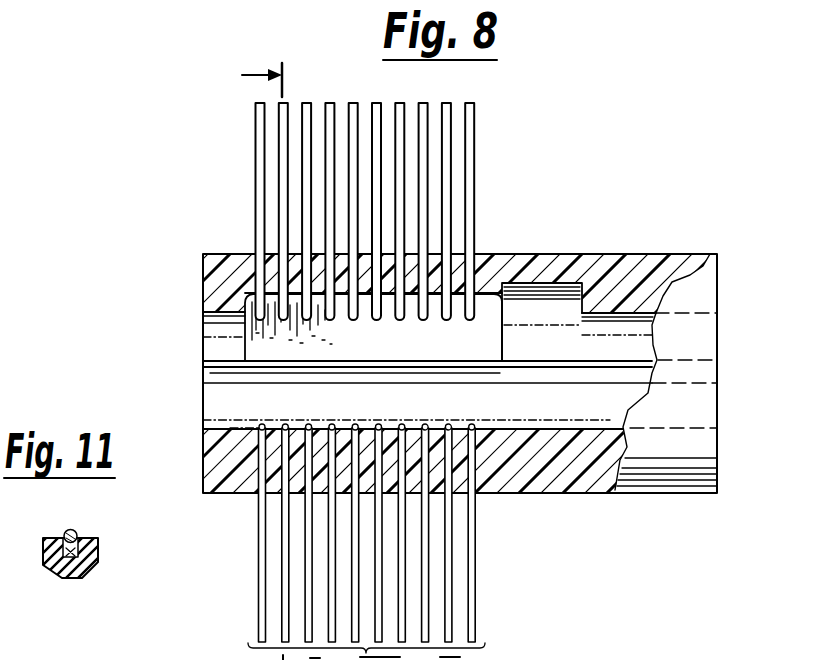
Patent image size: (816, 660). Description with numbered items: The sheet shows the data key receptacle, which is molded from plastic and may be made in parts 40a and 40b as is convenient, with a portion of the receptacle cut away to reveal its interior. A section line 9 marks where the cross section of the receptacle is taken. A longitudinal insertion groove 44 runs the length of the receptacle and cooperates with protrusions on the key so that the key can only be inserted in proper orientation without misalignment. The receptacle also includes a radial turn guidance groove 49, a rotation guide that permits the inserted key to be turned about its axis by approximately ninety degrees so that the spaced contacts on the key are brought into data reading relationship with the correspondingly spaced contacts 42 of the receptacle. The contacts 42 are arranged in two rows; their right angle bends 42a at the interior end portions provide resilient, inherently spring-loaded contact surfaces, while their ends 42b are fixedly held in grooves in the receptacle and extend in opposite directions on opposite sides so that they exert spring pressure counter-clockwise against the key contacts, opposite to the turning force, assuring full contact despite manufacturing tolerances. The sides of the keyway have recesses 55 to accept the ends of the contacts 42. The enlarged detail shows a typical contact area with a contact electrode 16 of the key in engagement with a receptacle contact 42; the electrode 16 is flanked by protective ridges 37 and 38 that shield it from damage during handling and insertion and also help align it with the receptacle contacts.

In FIG. 8, the section line 9 is at (270, 80).
In FIG. 11, the contact electrode 16 is at (52, 565).
In FIG. 11, the protective ridge 37 is at (63, 538).
In FIG. 11, the protective ridge 38 is at (84, 544).
In FIG. 8, the receptacle part 40a is at (643, 255).
In FIG. 8, the receptacle part 40b is at (705, 351).
In FIG. 8, the contacts 42 is at (482, 100).
In FIG. 11, the contacts 42 is at (78, 535).
In FIG. 8, the right angle bends 42a is at (473, 322).
In FIG. 8, the contact ends 42b is at (399, 322).
In FIG. 8, the longitudinal insertion groove 44 is at (257, 377).
In FIG. 8, the radial turn guidance groove 49 is at (547, 282).
In FIG. 8, the recess 55 is at (456, 298).